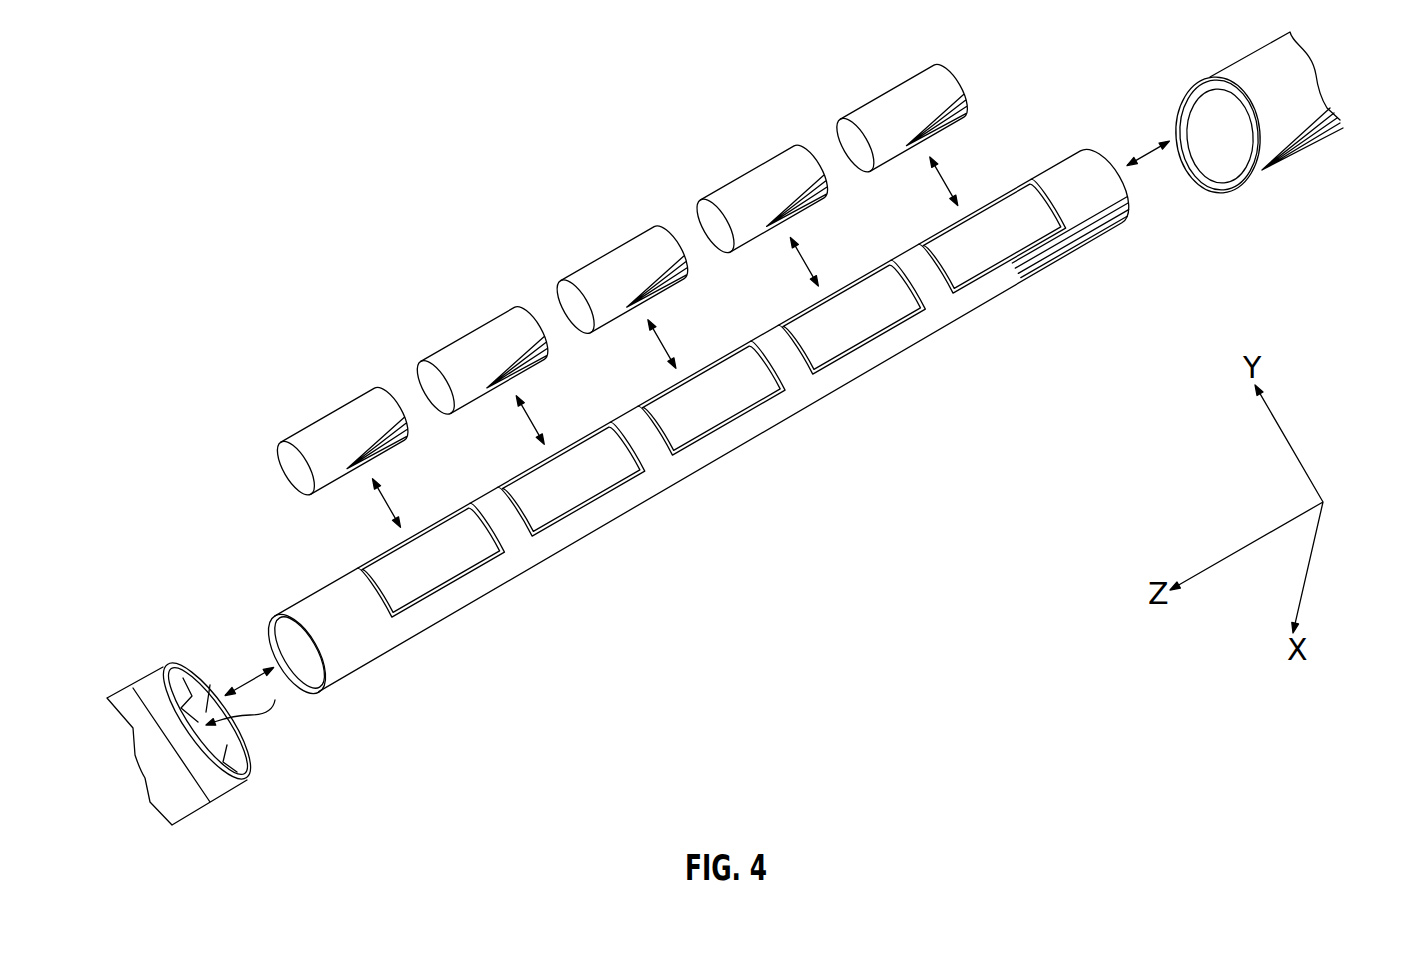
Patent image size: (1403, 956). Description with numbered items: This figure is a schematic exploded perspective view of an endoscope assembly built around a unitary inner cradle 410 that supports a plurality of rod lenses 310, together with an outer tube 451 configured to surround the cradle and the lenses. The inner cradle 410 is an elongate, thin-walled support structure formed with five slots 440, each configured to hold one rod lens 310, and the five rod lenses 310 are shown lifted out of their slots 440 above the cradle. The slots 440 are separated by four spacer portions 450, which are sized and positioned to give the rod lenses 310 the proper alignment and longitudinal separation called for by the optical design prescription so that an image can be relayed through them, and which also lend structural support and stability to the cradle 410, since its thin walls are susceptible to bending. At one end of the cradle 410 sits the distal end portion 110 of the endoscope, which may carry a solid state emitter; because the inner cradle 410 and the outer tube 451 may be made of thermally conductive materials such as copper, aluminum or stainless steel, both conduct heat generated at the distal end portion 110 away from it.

The distal end portion 110 is at (152, 684).
The rod lens 310 is at (613, 262).
The inner cradle 410 is at (750, 432).
The slot 440 is at (391, 570).
The spacer portion 450 is at (485, 510).
The outer tube 451 is at (1290, 140).